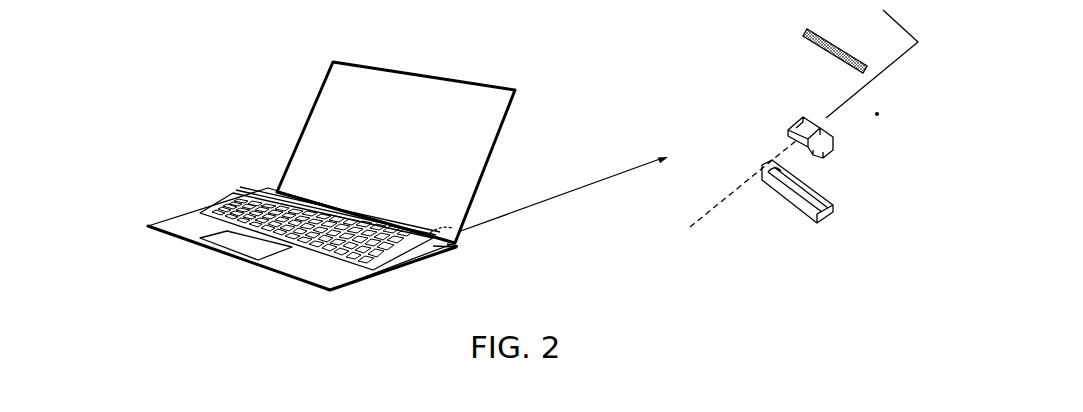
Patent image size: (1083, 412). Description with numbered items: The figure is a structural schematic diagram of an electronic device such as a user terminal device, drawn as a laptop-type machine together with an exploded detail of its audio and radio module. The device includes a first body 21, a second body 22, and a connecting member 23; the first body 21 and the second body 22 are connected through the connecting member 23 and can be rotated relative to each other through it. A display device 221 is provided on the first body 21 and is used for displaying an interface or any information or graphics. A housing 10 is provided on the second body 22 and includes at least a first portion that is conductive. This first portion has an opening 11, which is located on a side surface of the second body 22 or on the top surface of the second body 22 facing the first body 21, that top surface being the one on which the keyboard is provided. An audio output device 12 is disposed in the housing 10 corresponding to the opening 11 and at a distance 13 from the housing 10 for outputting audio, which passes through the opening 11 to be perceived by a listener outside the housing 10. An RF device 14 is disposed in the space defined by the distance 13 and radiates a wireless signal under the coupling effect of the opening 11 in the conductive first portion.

The housing 10 is at (436, 250).
The opening 11 is at (457, 248).
The audio output device 12 is at (815, 202).
The distance 13 is at (877, 114).
The RF device 14 is at (830, 149).
The first body 21 is at (420, 139).
The second body 22 is at (160, 220).
The connecting member 23 is at (276, 189).
The display device 221 is at (473, 127).